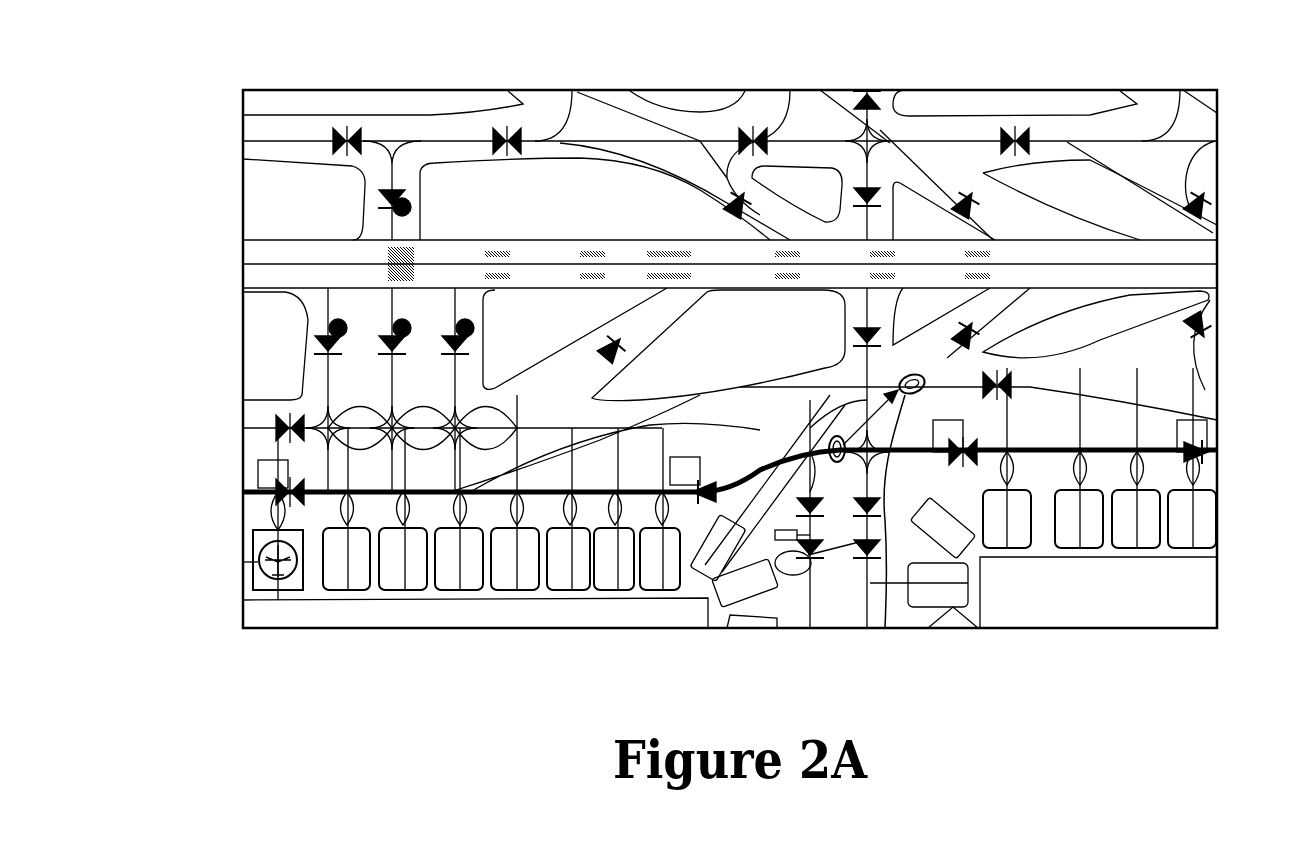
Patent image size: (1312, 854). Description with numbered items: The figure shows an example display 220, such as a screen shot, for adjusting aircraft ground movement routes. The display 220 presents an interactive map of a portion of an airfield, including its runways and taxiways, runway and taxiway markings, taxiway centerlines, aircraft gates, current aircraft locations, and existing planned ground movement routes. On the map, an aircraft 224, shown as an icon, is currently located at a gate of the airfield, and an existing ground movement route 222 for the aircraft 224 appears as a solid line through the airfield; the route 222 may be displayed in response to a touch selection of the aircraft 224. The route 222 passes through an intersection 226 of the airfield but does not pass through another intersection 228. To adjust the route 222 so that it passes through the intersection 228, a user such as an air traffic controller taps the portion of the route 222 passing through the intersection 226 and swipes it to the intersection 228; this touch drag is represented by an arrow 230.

The display 220 is at (205, 112).
The ground movement route 222 is at (485, 530).
The aircraft 224 is at (297, 580).
The intersection 226 is at (838, 462).
The intersection 228 is at (926, 387).
The arrow 230 is at (885, 628).